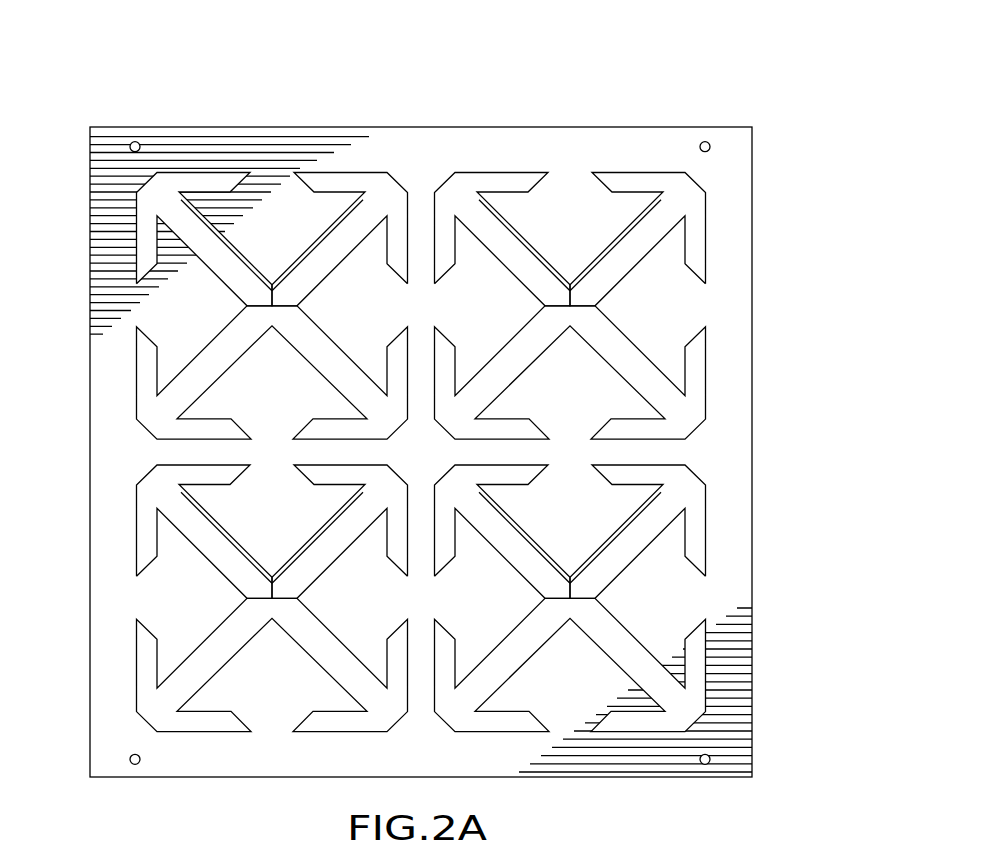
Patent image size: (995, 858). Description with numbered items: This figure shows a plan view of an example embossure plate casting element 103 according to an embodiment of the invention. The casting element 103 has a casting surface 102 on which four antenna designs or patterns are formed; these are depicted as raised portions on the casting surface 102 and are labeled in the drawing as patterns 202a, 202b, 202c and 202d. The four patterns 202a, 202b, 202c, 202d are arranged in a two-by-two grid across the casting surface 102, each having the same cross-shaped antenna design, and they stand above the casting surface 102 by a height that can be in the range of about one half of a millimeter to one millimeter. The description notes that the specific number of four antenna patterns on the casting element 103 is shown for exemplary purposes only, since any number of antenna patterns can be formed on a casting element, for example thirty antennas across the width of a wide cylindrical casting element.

The casting element 103 is at (779, 108).
The casting surface 102 is at (733, 711).
The first flexure cutout pattern 202a is at (229, 173).
The second flexure cutout pattern 202b is at (133, 530).
The third flexure cutout pattern 202c is at (503, 172).
The fourth flexure cutout pattern 202d is at (705, 533).